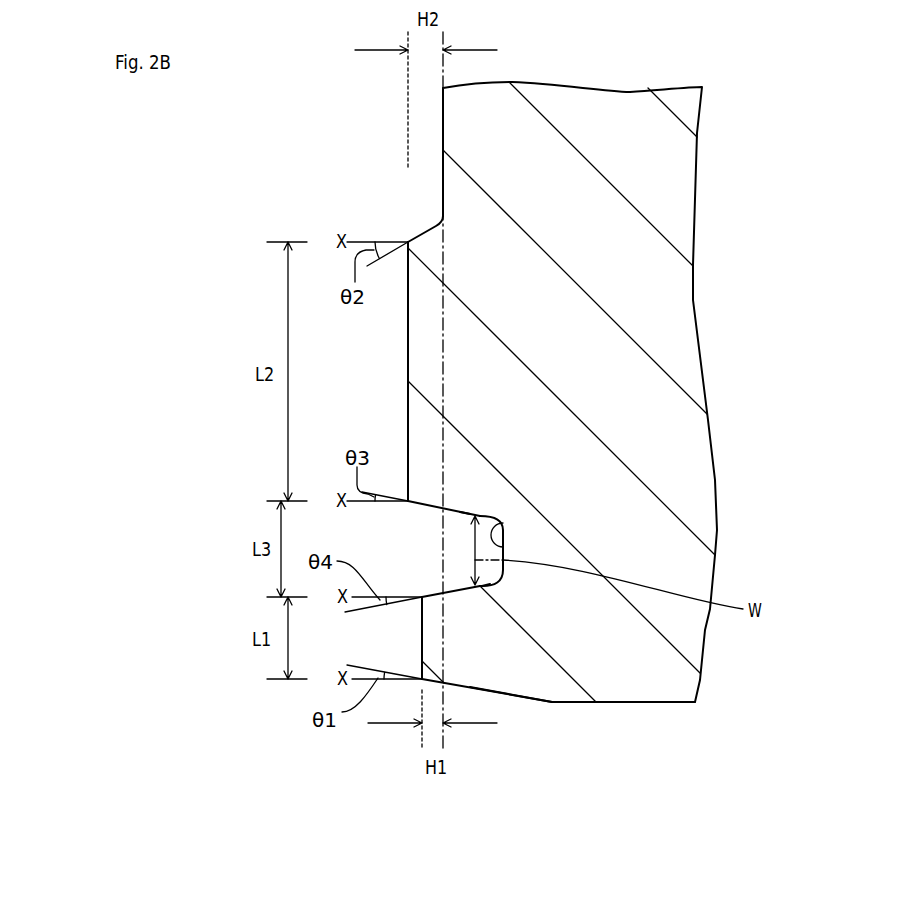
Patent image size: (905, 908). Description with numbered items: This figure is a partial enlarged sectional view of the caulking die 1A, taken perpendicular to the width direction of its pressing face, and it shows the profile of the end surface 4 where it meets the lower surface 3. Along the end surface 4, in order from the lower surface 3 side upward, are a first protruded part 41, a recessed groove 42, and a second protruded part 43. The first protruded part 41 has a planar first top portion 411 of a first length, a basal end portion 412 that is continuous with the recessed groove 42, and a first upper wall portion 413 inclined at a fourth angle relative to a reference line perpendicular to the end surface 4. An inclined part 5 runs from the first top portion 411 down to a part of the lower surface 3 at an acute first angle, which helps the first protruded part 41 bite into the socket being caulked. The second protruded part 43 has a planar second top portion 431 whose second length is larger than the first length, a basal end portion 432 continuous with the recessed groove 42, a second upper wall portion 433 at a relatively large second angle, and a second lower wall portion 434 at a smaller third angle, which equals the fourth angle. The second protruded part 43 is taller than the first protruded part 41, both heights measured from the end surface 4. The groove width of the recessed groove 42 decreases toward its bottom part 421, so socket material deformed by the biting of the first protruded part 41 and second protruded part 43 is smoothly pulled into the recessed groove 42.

The die 1A is at (763, 63).
The lower surface 3 is at (628, 703).
The end surface 4 is at (434, 200).
The inclined part 5 is at (492, 694).
The first protruded part 41 is at (540, 627).
The first top portion 411 is at (422, 640).
The basal end portion 412 is at (482, 592).
The first upper wall portion 413 is at (437, 593).
The recessed groove 42 is at (638, 547).
The bottom part 421 is at (502, 523).
The second protruded part 43 is at (533, 372).
The second top portion 431 is at (408, 372).
The basal end portion 432 is at (467, 510).
The second upper wall portion 433 is at (430, 229).
The second lower wall portion 434 is at (432, 506).